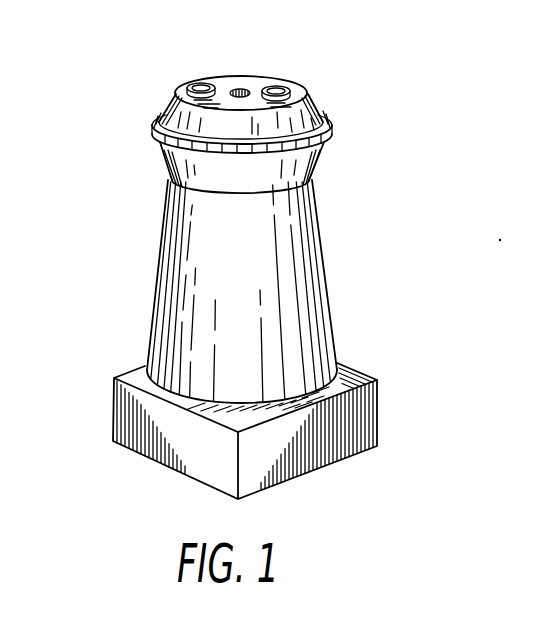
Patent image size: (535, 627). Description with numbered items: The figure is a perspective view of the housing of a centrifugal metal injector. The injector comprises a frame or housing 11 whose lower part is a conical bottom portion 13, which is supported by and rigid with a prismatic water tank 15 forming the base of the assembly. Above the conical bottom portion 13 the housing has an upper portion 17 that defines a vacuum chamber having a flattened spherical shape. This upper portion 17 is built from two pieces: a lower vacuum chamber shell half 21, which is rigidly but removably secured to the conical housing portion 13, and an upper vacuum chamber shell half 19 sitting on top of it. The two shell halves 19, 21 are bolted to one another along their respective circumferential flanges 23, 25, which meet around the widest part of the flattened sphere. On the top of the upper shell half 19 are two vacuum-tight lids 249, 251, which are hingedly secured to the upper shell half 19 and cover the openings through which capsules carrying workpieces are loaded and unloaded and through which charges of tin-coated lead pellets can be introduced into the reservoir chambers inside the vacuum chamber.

The frame or housing 11 is at (122, 284).
The conical bottom portion 13 is at (178, 230).
The prismatic water tank 15 is at (127, 396).
The upper portion 17 is at (151, 72).
The upper vacuum chamber shell half 19 is at (160, 109).
The lower vacuum chamber shell half 21 is at (318, 167).
The circumferential flange 23 is at (327, 128).
The circumferential flange 25 is at (332, 141).
The vacuum-tight lid 249 is at (202, 83).
The vacuum-tight lid 251 is at (281, 86).